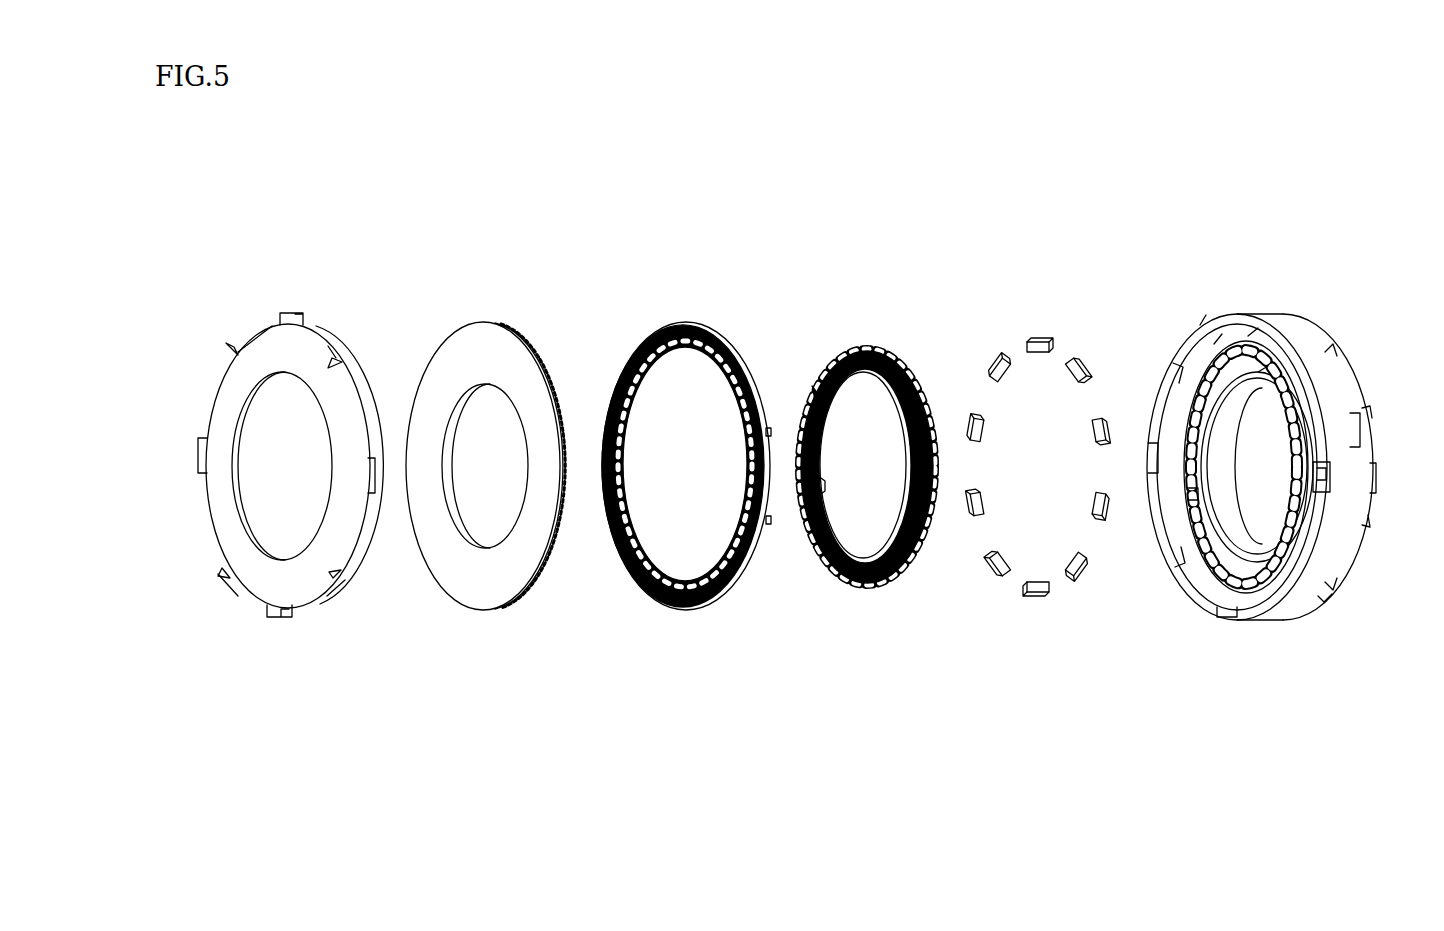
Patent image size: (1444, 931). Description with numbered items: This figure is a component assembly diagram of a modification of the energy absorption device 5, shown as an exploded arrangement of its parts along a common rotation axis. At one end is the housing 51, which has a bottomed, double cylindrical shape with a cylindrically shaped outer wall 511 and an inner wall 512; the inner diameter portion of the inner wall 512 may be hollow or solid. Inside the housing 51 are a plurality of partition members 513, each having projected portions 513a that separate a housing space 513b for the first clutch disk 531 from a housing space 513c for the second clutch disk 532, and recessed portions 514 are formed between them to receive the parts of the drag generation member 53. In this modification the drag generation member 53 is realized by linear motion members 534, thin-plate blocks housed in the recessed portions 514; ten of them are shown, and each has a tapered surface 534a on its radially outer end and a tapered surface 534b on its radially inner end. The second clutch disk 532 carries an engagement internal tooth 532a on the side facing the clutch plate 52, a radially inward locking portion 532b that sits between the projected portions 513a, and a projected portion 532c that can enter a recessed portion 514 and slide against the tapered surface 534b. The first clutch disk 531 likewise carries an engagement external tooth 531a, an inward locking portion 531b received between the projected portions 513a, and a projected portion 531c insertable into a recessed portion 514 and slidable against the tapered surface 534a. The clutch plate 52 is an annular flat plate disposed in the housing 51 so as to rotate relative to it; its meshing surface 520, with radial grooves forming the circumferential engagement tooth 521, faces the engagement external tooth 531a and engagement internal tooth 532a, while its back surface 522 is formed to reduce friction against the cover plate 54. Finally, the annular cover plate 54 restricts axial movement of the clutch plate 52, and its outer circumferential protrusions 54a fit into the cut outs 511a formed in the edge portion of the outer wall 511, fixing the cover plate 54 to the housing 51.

The energy absorption device 5 is at (540, 212).
The housing 51 is at (1356, 348).
The outer wall 511 is at (1340, 384).
The cut outs 511a is at (1330, 478).
The inner wall 512 is at (1232, 460).
The partition members 513 is at (1230, 328).
The projected portion 513a is at (1234, 343).
The housing space 513b is at (1250, 338).
The housing space 513c is at (1261, 368).
The recessed portions 514 is at (1188, 494).
The clutch plate 52 is at (440, 322).
The meshing surface 520 is at (556, 365).
The engagement tooth 521 is at (534, 345).
The back surface 522 is at (497, 369).
The drag generation member 53 is at (1075, 272).
The first clutch disk 531 is at (738, 334).
The engagement external tooth 531a is at (660, 328).
The locking portion 531b is at (682, 348).
The projected portion 531c is at (748, 354).
The second clutch disk 532 is at (914, 362).
The engagement internal tooth 532a is at (816, 394).
The locking portion 532b is at (856, 352).
The projected portion 532c is at (826, 492).
The linear motion member 534 is at (1028, 330).
The tapered surface 534a is at (1040, 334).
The tapered surface 534b is at (1038, 366).
The cover plate 54 is at (205, 386).
The protrusions 54a is at (288, 315).